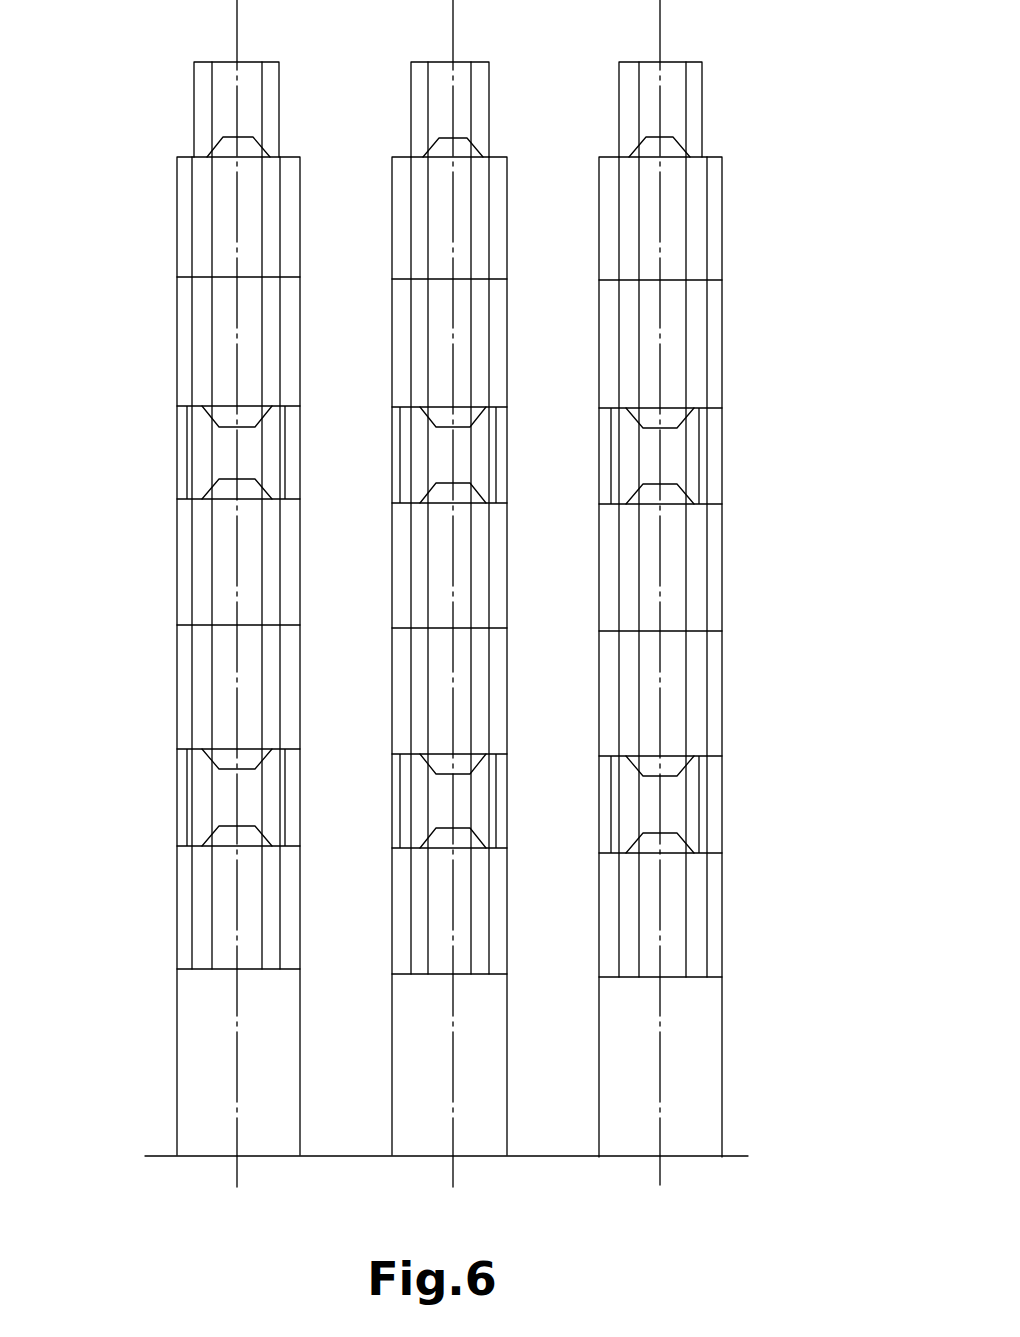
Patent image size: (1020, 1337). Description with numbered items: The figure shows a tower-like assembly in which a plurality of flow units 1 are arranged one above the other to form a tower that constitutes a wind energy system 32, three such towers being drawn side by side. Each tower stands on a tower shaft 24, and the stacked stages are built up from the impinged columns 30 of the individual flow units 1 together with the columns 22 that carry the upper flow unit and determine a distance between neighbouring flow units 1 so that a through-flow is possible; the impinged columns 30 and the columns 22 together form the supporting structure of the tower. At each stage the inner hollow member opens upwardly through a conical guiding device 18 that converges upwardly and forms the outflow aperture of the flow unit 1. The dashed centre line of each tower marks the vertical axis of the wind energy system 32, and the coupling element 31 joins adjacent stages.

The flow unit 1 is at (720, 278).
The conical guiding device 18 is at (647, 143).
The columns 22 is at (715, 483).
The tower shaft 24 is at (722, 1050).
The impinged columns 30 is at (713, 200).
The coupling element 31 is at (693, 134).
The wind energy system 32 is at (235, 43).